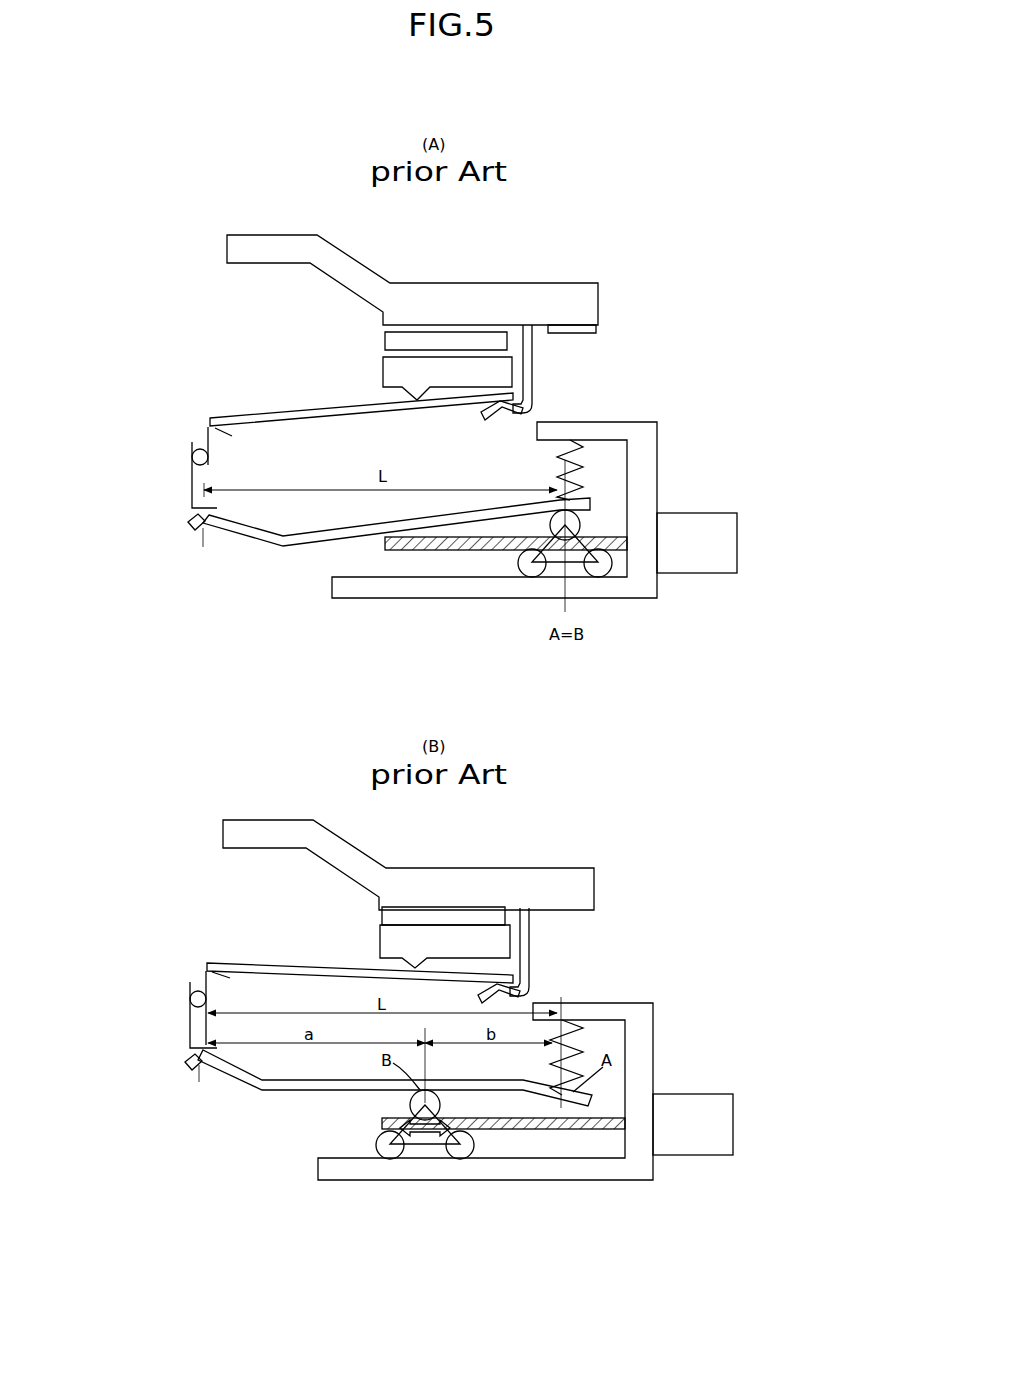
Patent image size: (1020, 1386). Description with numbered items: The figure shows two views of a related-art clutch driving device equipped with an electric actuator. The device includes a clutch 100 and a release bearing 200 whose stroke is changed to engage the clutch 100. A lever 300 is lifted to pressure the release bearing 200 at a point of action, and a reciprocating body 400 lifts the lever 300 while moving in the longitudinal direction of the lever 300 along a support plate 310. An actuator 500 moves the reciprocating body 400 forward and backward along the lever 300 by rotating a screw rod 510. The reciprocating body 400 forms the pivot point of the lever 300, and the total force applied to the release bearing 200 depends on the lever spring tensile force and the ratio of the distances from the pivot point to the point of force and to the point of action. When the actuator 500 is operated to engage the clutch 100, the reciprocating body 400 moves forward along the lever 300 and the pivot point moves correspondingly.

The clutch 100 is at (585, 297).
The release bearing 200 is at (192, 480).
The lever 300 is at (283, 543).
The support plate 310 is at (332, 586).
The reciprocating body 400 is at (568, 537).
The screw rod 510 is at (603, 538).
The actuator 500 is at (722, 547).